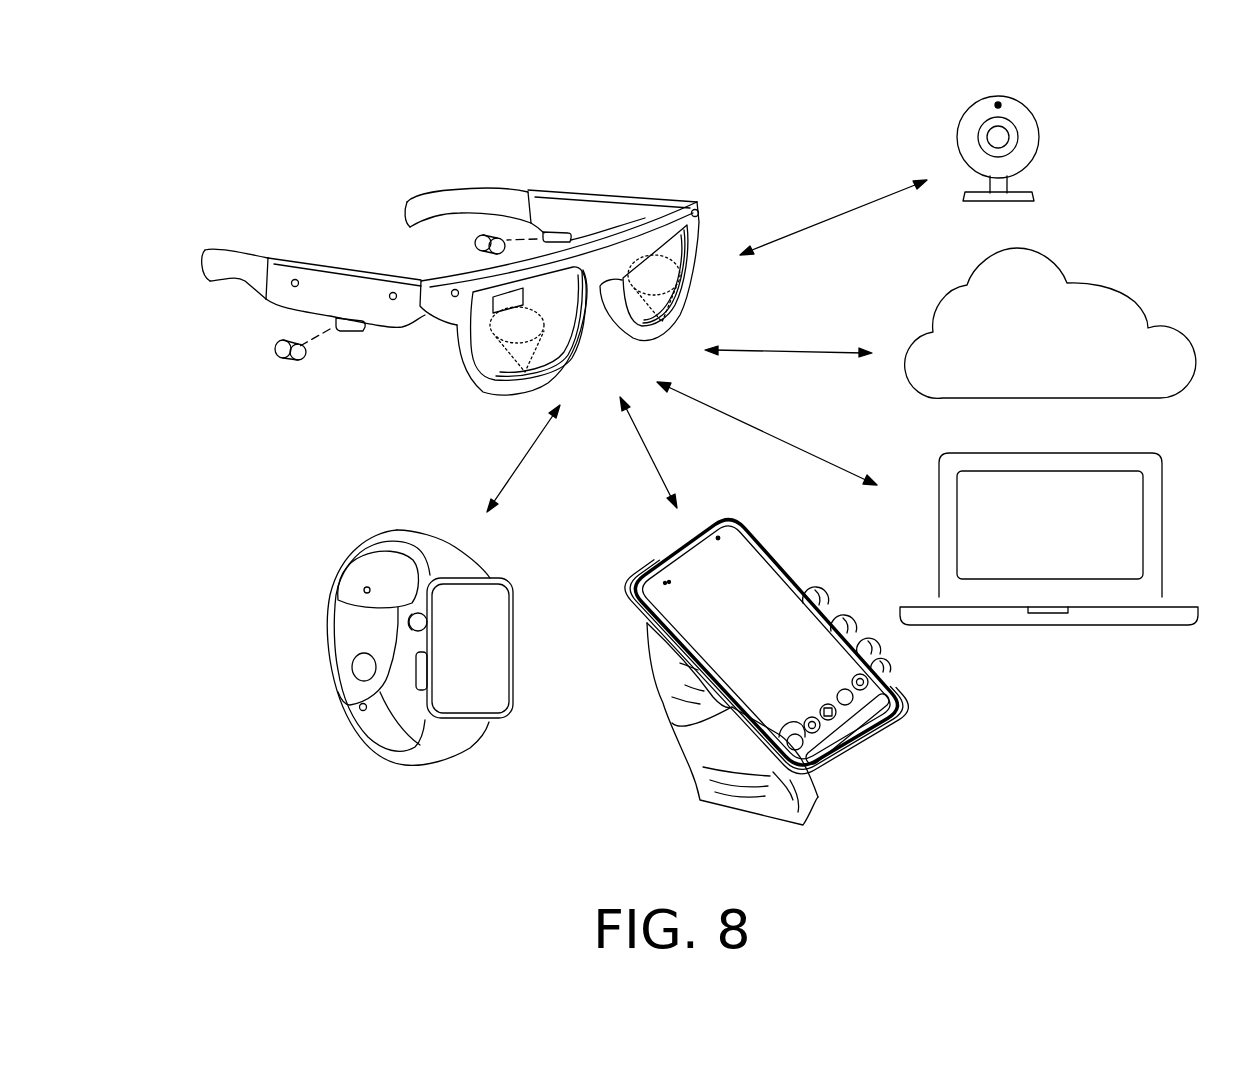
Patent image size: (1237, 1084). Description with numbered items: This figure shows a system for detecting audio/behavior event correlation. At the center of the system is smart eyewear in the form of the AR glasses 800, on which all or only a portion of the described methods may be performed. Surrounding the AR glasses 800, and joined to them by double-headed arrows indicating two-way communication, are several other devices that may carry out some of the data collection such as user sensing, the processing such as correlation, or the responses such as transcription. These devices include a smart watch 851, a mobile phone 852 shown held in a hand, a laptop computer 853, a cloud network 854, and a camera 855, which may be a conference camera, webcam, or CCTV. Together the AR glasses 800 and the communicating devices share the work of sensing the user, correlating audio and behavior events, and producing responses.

The AR glasses 800 is at (240, 250).
The smart watch 851 is at (400, 532).
The mobile phone 852 is at (657, 562).
The laptop computer 853 is at (939, 482).
The cloud network 854 is at (942, 298).
The camera 855 is at (976, 102).